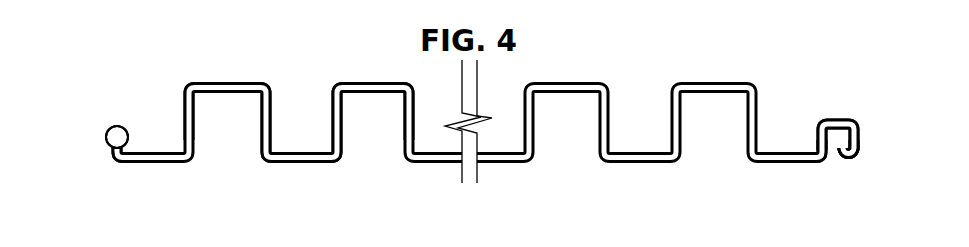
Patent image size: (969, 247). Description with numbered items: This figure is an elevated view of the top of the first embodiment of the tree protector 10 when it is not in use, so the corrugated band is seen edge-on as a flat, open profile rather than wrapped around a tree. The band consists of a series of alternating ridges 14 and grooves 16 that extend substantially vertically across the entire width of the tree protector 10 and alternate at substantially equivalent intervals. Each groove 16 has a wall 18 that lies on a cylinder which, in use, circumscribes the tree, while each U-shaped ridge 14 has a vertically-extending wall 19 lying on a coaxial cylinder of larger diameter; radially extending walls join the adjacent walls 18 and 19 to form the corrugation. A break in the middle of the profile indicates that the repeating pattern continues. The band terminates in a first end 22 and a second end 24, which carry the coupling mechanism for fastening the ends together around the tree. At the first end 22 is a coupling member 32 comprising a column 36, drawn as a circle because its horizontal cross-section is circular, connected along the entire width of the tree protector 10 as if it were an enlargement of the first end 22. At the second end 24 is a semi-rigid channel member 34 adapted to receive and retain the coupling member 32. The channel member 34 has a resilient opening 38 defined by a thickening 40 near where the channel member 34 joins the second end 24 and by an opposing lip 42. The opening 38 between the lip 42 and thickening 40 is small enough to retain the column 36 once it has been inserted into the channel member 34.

The tree protector 10 is at (707, 75).
The ridges 14 is at (217, 82).
The grooves 16 is at (294, 148).
The walls 18 is at (303, 163).
The vertically-extending wall 19 is at (362, 82).
The first end 22 is at (122, 167).
The second end 24 is at (817, 168).
The coupling member 32 is at (104, 123).
The channel member 34 is at (840, 110).
The column 36 is at (116, 137).
The resilient opening 38 is at (837, 159).
The thickening 40 is at (823, 150).
The lip 42 is at (846, 159).